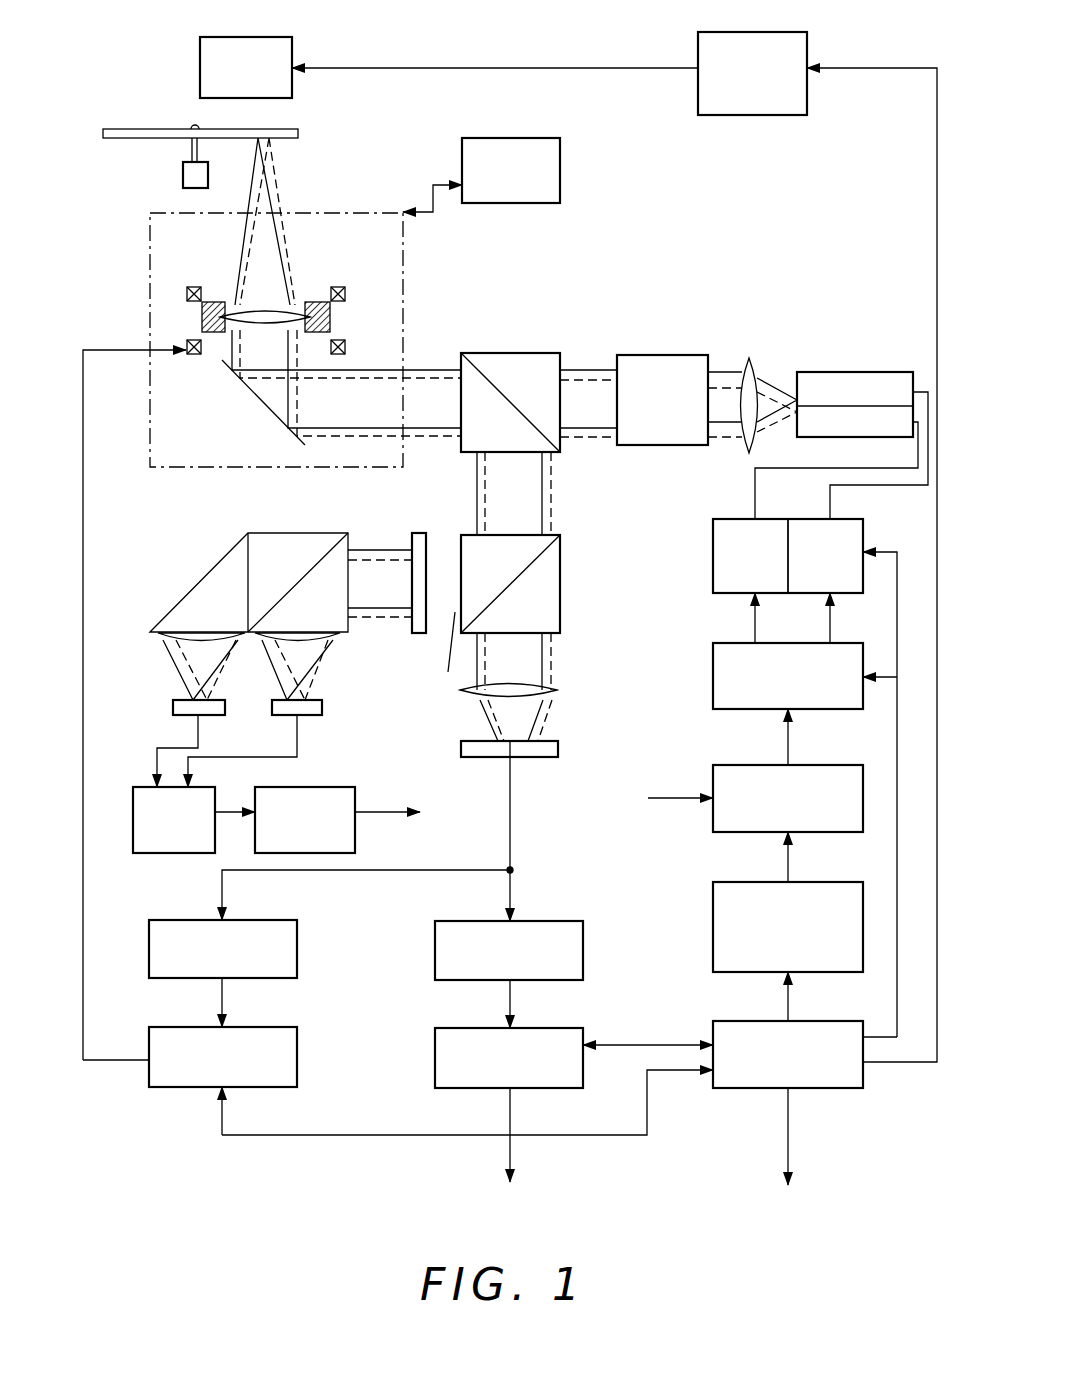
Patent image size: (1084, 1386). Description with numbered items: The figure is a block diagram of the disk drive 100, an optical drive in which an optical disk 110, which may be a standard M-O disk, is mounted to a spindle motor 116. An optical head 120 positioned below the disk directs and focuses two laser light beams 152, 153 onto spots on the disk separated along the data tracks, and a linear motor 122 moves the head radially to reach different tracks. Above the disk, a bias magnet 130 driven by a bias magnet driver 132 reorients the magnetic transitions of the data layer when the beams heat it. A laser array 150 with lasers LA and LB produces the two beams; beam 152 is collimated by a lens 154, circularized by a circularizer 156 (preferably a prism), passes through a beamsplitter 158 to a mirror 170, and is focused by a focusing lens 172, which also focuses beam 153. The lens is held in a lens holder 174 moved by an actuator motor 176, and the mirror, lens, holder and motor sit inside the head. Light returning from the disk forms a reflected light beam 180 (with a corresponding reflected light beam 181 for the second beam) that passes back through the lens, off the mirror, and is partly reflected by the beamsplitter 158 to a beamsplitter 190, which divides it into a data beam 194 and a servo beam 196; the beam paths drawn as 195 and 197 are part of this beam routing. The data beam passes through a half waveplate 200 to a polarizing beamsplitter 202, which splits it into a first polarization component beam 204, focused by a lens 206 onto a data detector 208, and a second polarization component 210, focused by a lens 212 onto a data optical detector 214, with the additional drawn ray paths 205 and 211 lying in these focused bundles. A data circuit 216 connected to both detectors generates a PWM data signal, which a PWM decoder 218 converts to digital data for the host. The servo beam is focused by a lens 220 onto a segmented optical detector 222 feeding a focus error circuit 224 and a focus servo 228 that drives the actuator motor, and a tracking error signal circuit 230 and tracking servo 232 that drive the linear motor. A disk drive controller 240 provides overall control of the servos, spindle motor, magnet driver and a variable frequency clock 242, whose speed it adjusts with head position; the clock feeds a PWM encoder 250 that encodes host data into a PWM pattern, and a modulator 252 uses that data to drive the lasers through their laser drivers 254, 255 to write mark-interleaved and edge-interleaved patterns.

The disk drive 100 is at (290, 1165).
The optical disk 110 is at (135, 129).
The spindle motor 116 is at (183, 170).
The optical head 120 is at (370, 212).
The linear motor 122 is at (496, 138).
The bias magnet 130 is at (245, 37).
The bias magnet driver 132 is at (698, 55).
The laser array 150 is at (840, 372).
The light beam 152 is at (253, 165).
The light beam 153 is at (282, 178).
The lens 154 is at (745, 360).
The circularizer 156 is at (668, 355).
The beamsplitter 158 is at (548, 353).
The mirror 170 is at (248, 385).
The focusing lens 172 is at (228, 305).
The lens holder 174 is at (214, 335).
The actuator motor 176 is at (188, 340).
The reflected light beam 180 is at (245, 262).
The reflected light beam 181 is at (553, 468).
The beamsplitter 190 is at (563, 550).
The data beam 194 is at (441, 654).
The light beam 195 is at (443, 618).
The servo beam 196 is at (545, 660).
The light beam 197 is at (553, 640).
The half waveplate 200 is at (415, 533).
The polarizing beamsplitter 202 is at (203, 580).
The first polarization component beam 204 is at (175, 660).
The light beam 205 is at (190, 680).
The lens 206 is at (160, 633).
The data detector 208 is at (185, 715).
The second polarization component 210 is at (315, 658).
The light beam 211 is at (316, 680).
The lens 212 is at (337, 638).
The data optical detector 214 is at (305, 715).
The data circuit 216 is at (173, 853).
The PWM decoder 218 is at (300, 787).
The lens 220 is at (556, 690).
The segmented optical detector 222 is at (558, 741).
The focus error circuit 224 is at (190, 920).
The focus servo 228 is at (190, 1027).
The tracking error signal circuit 230 is at (478, 921).
The tracking servo 232 is at (478, 1028).
The disk drive controller 240 is at (728, 1021).
The variable frequency clock 242 is at (735, 882).
The PWM encoder 250 is at (743, 765).
The modulator 252 is at (728, 643).
The laser driver 254 is at (855, 519).
The laser driver 255 is at (723, 519).